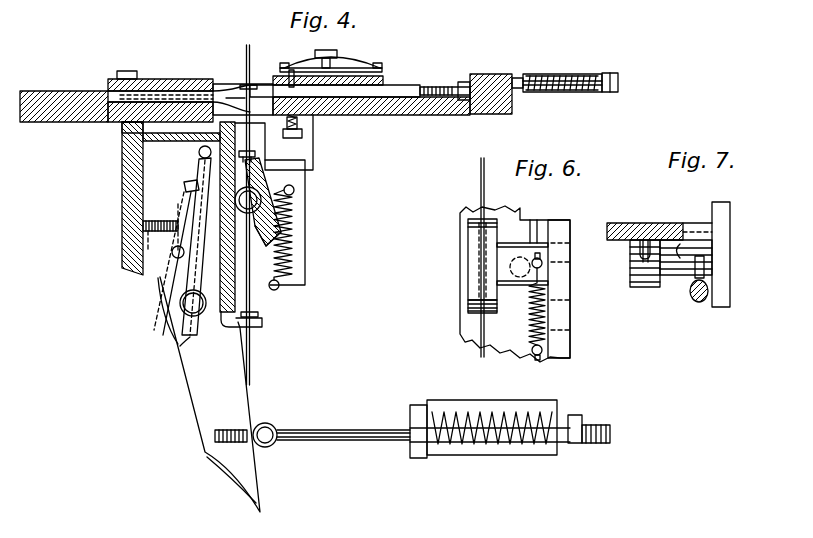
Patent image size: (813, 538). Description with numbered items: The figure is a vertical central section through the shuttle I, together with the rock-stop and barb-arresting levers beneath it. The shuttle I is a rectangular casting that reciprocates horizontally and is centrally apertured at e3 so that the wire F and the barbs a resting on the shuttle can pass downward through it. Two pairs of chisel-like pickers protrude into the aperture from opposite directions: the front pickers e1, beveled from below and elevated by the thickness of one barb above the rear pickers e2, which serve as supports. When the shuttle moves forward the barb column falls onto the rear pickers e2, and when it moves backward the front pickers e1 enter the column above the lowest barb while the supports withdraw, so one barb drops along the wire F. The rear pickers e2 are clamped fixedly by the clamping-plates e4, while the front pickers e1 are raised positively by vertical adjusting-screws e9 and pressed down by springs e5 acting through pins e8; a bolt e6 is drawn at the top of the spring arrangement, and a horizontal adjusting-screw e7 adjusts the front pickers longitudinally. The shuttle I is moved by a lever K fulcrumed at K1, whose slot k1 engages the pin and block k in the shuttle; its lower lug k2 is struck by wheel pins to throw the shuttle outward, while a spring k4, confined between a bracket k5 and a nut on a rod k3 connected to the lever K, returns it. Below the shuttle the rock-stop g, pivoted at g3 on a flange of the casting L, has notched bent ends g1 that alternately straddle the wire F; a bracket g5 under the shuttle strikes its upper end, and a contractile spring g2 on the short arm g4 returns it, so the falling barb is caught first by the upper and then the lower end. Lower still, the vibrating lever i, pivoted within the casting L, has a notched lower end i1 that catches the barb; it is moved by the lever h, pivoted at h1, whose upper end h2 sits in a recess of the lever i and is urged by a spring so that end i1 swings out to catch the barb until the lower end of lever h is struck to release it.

In FIG. 4, the shuttle I is at (68, 86).
In FIG. 4, the pin and block k is at (157, 96).
In FIG. 4, the slot k1 is at (124, 131).
In FIG. 4, the casting L is at (122, 190).
In FIG. 4, the spring k4 is at (122, 240).
In FIG. 4, the upper end of lever h h2 is at (187, 188).
In FIG. 4, the pivot pin h1 is at (178, 258).
In FIG. 4, the lever h is at (179, 302).
In FIG. 4, the vibrating lever i is at (214, 258).
In FIG. 4, the fulcrum K1 is at (190, 307).
In FIG. 4, the lever K is at (206, 380).
In FIG. 4, the laterally-projecting lug k2 is at (228, 472).
In FIG. 4, the rod k3 is at (360, 441).
In FIG. 4, the bracket k5 is at (440, 452).
In FIG. 4, the clamping-plates e4 is at (160, 75).
In FIG. 4, the rear pickers e2 is at (257, 96).
In FIG. 4, the wire F is at (250, 67).
In FIG. 6, the wire F is at (480, 192).
In FIG. 7, the wire F is at (640, 271).
In FIG. 4, the barbs a is at (258, 88).
In FIG. 4, the aperture e3 is at (231, 98).
In FIG. 4, the pins e8 is at (292, 70).
In FIG. 4, the spring bolt e6 is at (334, 60).
In FIG. 4, the springs e5 is at (373, 68).
In FIG. 4, the front pickers e1 is at (384, 90).
In FIG. 4, the horizontal adjusting-screw e7 is at (463, 82).
In FIG. 4, the vertical adjusting-screws e9 is at (302, 133).
In FIG. 4, the bent ends of rock-stop g1 is at (252, 152).
In FIG. 6, the bent ends of rock-stop g1 is at (468, 221).
In FIG. 7, the bent ends of rock-stop g1 is at (637, 247).
In FIG. 4, the short arm g4 is at (273, 148).
In FIG. 7, the short arm g4 is at (705, 265).
In FIG. 4, the bracket g5 is at (313, 170).
In FIG. 4, the rock-stop g is at (272, 214).
In FIG. 6, the rock-stop g is at (481, 262).
In FIG. 7, the rock-stop g is at (683, 262).
In FIG. 4, the contractile spring g2 is at (293, 242).
In FIG. 6, the contractile spring g2 is at (531, 317).
In FIG. 7, the contractile spring g2 is at (700, 303).
In FIG. 4, the pivot g3 is at (268, 234).
In FIG. 7, the pivot g3 is at (660, 249).
In FIG. 4, the lower end of lever i i1 is at (262, 322).